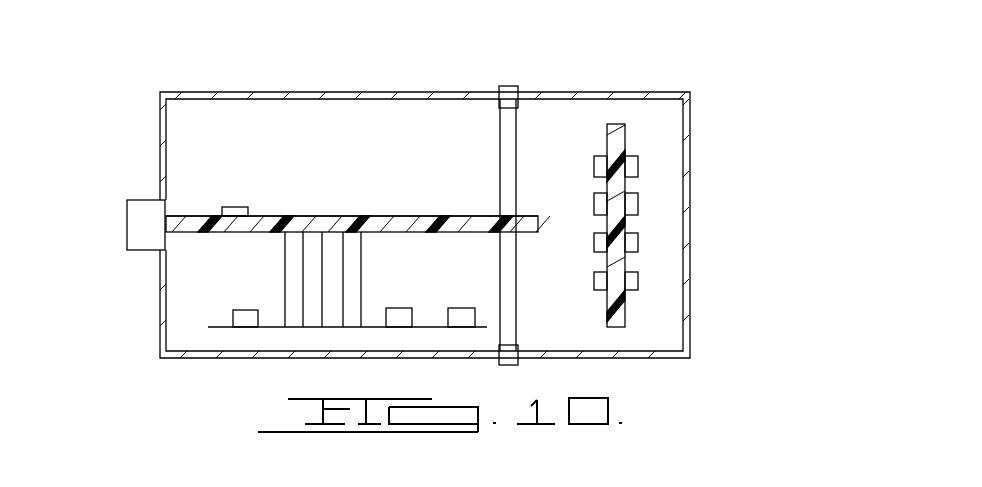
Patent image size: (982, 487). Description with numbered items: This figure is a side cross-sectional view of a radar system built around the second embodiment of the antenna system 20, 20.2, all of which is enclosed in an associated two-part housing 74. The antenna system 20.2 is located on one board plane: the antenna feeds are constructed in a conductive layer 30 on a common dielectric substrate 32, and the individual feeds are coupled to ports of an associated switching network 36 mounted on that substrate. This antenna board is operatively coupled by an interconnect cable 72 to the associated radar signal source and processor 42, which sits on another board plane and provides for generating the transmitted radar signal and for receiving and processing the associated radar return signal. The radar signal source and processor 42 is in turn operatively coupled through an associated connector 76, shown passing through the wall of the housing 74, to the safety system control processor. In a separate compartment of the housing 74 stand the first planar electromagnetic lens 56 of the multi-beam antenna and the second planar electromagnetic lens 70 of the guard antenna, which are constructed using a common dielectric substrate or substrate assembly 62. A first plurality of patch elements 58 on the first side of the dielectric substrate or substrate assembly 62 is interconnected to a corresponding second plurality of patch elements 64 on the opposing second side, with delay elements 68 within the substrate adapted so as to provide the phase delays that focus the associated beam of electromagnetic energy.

The antenna system 20 is at (441, 182).
The second embodiment of the antenna system 20.2 is at (612, 78).
The two-part housing 74 is at (300, 97).
The connector 76 is at (128, 207).
The dielectric substrate 32 is at (332, 218).
The conductive layer 30 is at (274, 216).
The switching network 36 is at (230, 207).
The interconnect cable 72 is at (300, 274).
The radar signal source and processor 42 is at (407, 296).
The first planar electromagnetic lens 56 is at (665, 212).
The second planar electromagnetic lens 70 is at (660, 223).
The dielectric substrate or substrate assembly 62 is at (622, 133).
The first plurality of patch elements 58 is at (598, 204).
The delay elements 68 is at (628, 185).
The second plurality of patch elements 64 is at (638, 242).